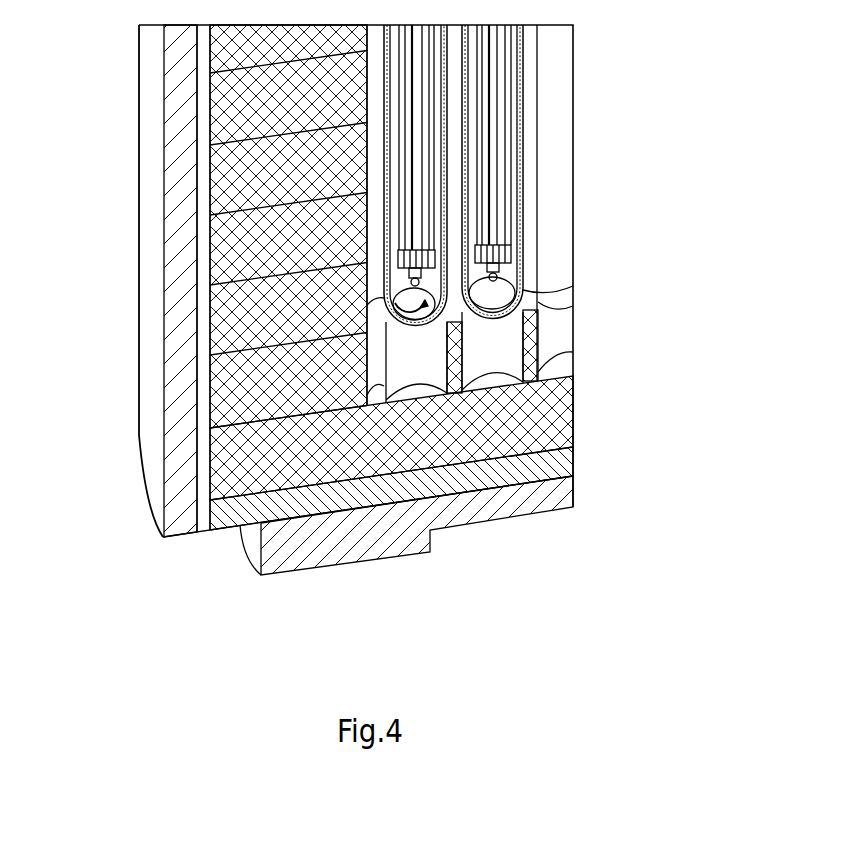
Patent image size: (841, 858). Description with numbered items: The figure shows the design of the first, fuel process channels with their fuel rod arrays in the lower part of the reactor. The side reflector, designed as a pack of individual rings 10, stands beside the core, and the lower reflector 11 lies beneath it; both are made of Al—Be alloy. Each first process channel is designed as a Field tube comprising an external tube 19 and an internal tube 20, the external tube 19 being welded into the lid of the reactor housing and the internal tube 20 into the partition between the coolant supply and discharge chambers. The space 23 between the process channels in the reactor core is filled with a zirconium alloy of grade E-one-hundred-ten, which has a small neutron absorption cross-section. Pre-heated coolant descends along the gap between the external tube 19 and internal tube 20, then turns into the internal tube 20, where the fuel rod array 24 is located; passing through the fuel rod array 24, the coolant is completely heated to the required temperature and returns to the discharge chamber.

The individual rings 10 is at (232, 250).
The lower reflector 11 is at (530, 425).
The external tube 19 is at (490, 303).
The internal tube 20 is at (506, 273).
The space 23 is at (376, 302).
The fuel rod array 24 is at (488, 222).